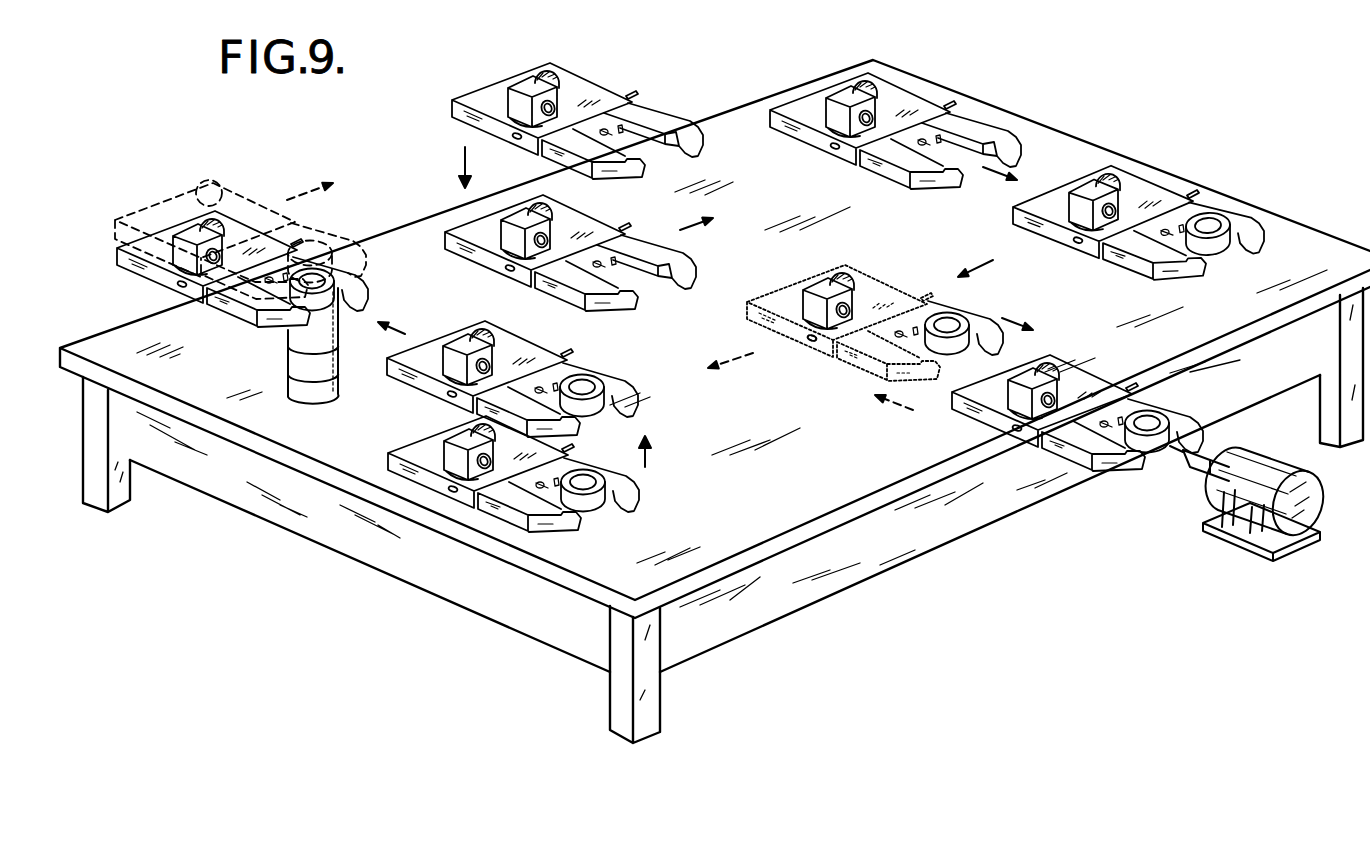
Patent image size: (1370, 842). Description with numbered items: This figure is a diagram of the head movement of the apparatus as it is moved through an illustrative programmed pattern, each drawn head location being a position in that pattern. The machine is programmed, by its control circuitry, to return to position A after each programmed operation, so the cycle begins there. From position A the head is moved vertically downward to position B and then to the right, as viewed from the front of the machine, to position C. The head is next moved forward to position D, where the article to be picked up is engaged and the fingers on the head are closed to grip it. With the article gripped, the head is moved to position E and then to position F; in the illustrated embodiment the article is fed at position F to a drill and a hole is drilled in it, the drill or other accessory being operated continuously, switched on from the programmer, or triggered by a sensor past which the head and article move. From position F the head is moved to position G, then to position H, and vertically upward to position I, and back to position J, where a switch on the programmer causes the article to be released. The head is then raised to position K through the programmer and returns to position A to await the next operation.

The position A is at (505, 83).
The position B is at (500, 247).
The position C is at (818, 125).
The position D is at (1090, 240).
The position E is at (872, 295).
The position F is at (1000, 410).
The position G is at (818, 340).
The position H is at (623, 490).
The position I is at (432, 372).
The position J is at (242, 293).
The position K is at (167, 193).